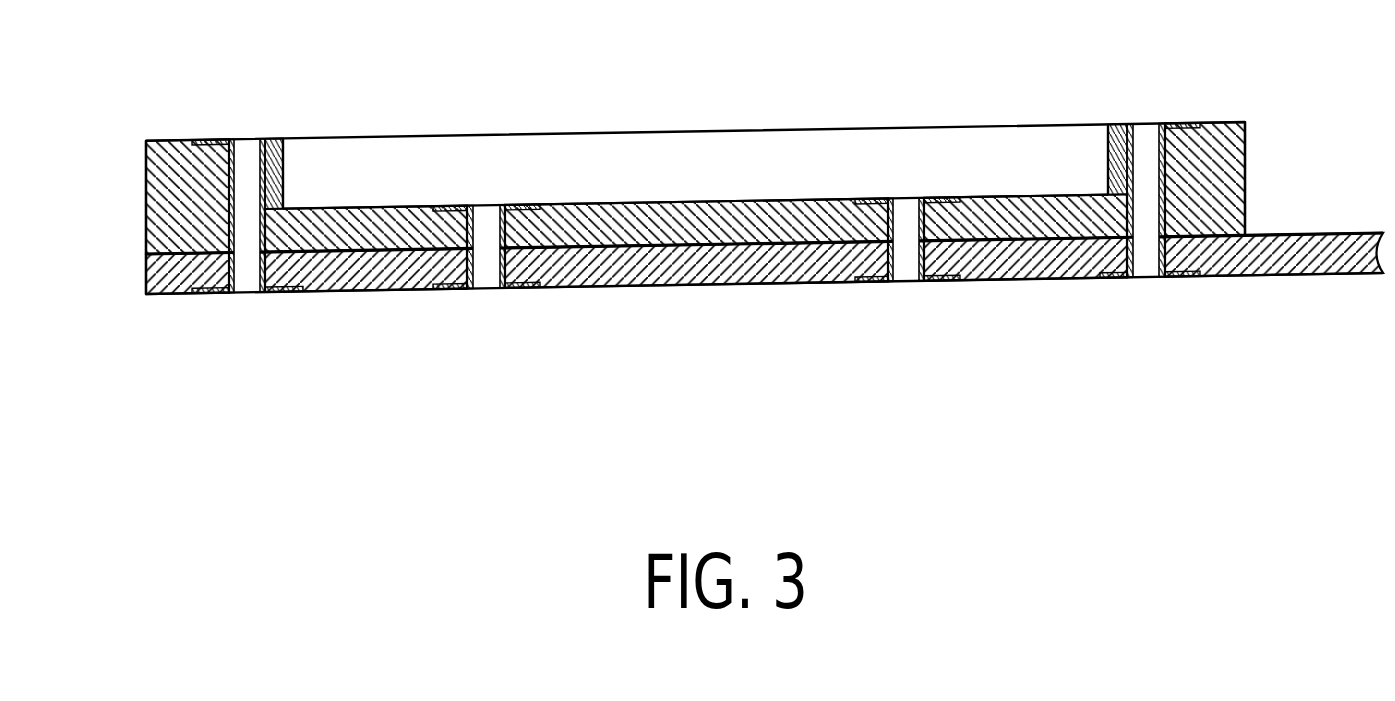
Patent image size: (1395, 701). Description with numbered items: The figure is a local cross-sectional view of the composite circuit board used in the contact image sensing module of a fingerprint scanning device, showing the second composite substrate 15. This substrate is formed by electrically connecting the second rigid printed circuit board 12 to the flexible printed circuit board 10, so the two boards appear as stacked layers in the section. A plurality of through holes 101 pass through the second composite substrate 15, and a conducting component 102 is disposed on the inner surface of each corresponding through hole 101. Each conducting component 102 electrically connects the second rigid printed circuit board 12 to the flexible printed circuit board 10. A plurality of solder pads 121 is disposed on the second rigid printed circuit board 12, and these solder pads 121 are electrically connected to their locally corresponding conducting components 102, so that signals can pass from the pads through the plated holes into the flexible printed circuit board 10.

The flexible printed circuit board 10 is at (173, 281).
The through hole 101 is at (251, 279).
The conducting component 102 is at (305, 278).
The second rigid printed circuit board 12 is at (146, 218).
The solder pad 121 is at (273, 139).
The second composite substrate 15 is at (601, 291).